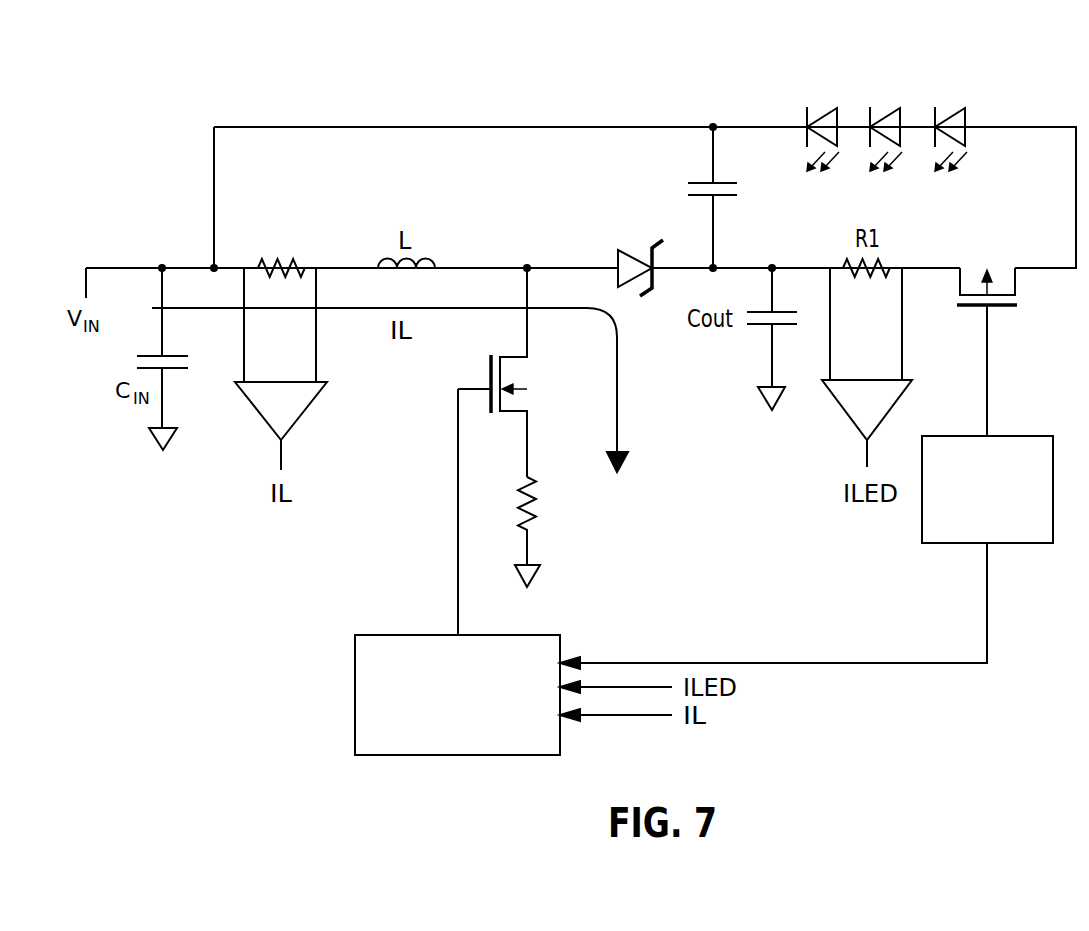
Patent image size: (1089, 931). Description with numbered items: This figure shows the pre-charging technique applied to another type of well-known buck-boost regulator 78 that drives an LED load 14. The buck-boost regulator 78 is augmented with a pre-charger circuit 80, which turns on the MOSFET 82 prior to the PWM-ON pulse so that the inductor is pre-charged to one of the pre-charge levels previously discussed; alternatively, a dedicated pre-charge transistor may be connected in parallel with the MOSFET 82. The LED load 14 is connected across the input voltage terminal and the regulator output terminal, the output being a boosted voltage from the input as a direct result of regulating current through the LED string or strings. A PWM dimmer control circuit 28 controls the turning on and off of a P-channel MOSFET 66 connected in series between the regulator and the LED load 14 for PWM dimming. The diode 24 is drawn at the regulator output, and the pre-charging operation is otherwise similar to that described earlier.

The buck-boost regulator 78 is at (689, 88).
The LED load 14 is at (868, 76).
The zener diode 24 is at (626, 250).
The P-channel MOSFET 66 is at (999, 270).
The PWM dimmer control circuit 28 is at (1013, 436).
The MOSFET 82 is at (513, 414).
The pre-charger circuit 80 is at (355, 666).